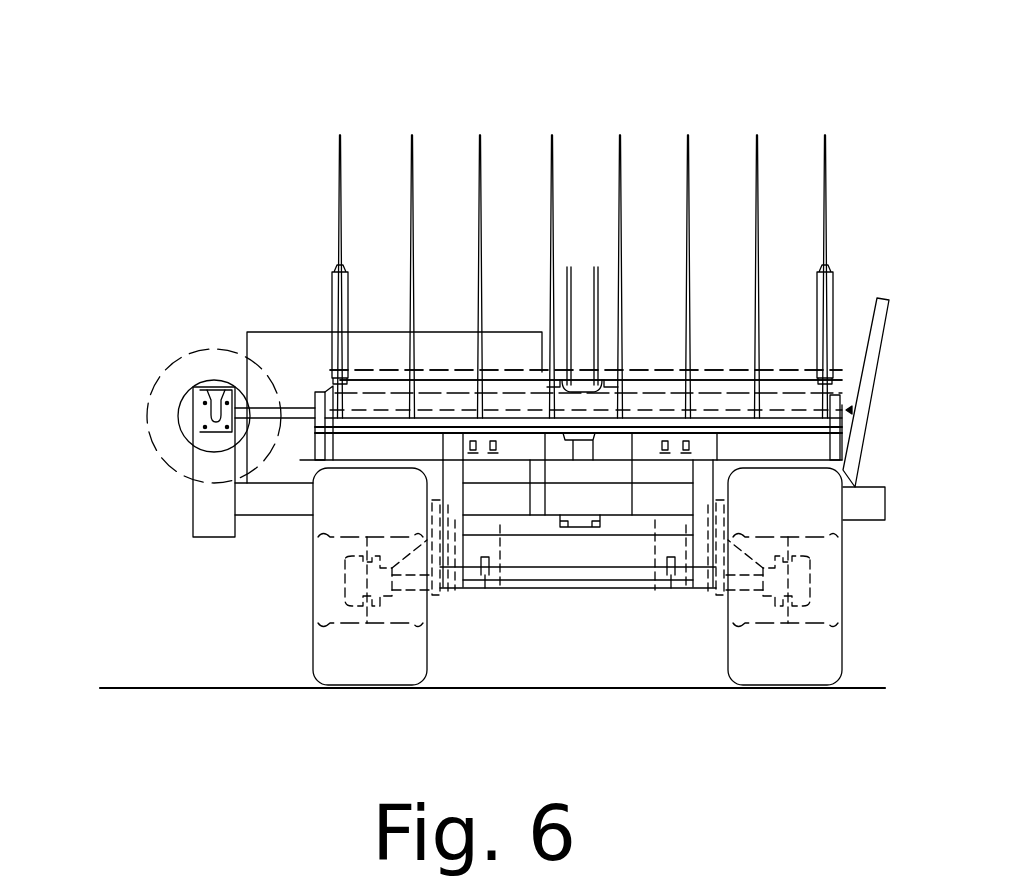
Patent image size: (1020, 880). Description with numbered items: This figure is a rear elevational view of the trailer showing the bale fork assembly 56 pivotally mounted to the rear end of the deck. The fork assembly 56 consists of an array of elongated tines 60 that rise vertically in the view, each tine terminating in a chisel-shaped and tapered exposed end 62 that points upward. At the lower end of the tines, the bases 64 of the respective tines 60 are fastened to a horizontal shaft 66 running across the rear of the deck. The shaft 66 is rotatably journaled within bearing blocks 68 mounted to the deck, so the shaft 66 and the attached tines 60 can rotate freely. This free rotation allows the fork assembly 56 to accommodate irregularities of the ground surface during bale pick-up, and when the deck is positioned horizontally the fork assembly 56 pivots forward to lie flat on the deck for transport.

The bale fork assembly 56 is at (740, 127).
The elongated tines 60 is at (689, 244).
The exposed end 62 is at (688, 168).
The bases 64 is at (482, 372).
The shaft 66 is at (450, 372).
The bearing blocks 68 is at (316, 392).